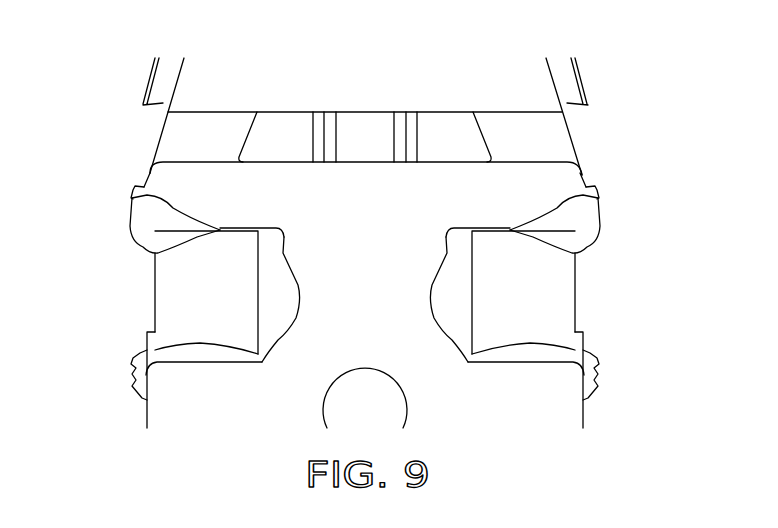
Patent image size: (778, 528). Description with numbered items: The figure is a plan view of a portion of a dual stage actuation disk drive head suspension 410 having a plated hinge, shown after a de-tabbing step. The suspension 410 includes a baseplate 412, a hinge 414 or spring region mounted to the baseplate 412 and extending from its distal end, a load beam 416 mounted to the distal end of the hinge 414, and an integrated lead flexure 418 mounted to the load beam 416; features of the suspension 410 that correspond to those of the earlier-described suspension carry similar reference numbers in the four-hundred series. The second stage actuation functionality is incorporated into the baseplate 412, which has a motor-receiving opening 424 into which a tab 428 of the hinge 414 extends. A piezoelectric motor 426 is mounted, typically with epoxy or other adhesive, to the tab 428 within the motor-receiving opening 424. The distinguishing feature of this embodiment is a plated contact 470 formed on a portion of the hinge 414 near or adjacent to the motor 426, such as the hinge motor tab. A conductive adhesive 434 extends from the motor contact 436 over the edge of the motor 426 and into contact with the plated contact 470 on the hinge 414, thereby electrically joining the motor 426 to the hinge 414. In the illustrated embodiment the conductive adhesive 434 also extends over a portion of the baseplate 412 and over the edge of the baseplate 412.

The suspension 410 is at (360, 246).
The baseplate 412 is at (570, 187).
The hinge 414 is at (188, 138).
The load beam 416 is at (500, 87).
The integrated lead flexure 418 is at (365, 120).
The motor-receiving opening 424 is at (270, 312).
The motor 426 is at (558, 302).
The tab 428 is at (522, 433).
The conductive adhesive 434 is at (153, 224).
The motor contact 436 is at (167, 233).
The plated contact 470 is at (128, 197).